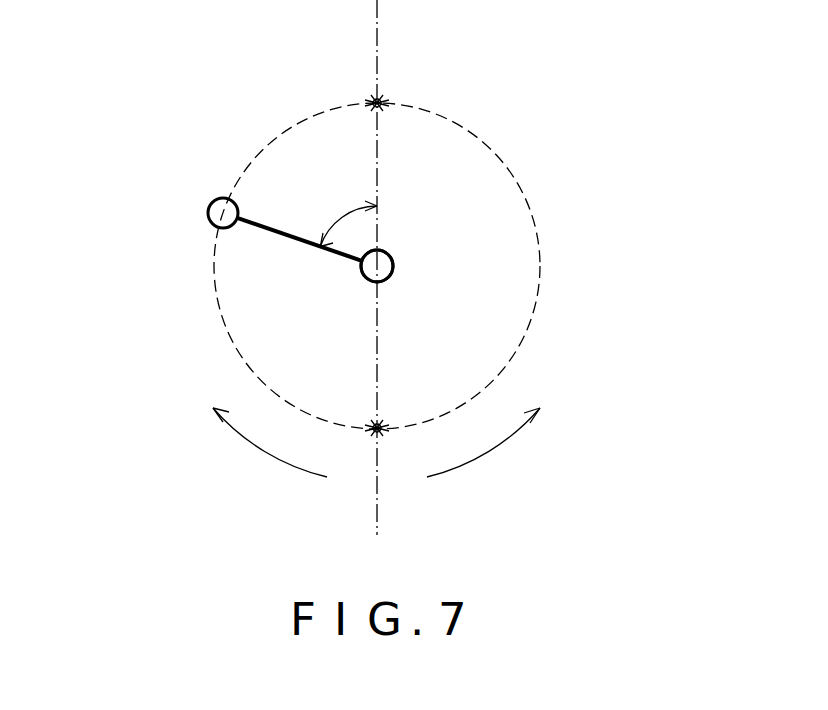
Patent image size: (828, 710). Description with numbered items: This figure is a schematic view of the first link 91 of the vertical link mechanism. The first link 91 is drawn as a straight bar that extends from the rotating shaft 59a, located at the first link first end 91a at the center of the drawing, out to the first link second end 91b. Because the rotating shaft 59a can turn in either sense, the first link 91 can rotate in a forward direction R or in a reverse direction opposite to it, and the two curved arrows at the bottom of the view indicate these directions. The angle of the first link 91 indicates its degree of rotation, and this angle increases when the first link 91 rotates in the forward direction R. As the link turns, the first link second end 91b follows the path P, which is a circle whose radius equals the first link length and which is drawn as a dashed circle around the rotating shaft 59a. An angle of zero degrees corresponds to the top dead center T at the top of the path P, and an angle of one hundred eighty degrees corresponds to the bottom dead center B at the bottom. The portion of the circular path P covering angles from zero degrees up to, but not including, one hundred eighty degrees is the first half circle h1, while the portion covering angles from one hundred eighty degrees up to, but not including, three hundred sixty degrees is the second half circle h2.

The first link 91 is at (307, 241).
The first link first end 91a is at (440, 228).
The rotating shaft 59a is at (377, 266).
The first link second end 91b is at (208, 208).
The first half circle h1 is at (214, 264).
The second half circle h2 is at (540, 268).
The top dead center T is at (377, 103).
The bottom dead center B is at (377, 427).
The path P is at (522, 147).
The forward direction R is at (496, 425).